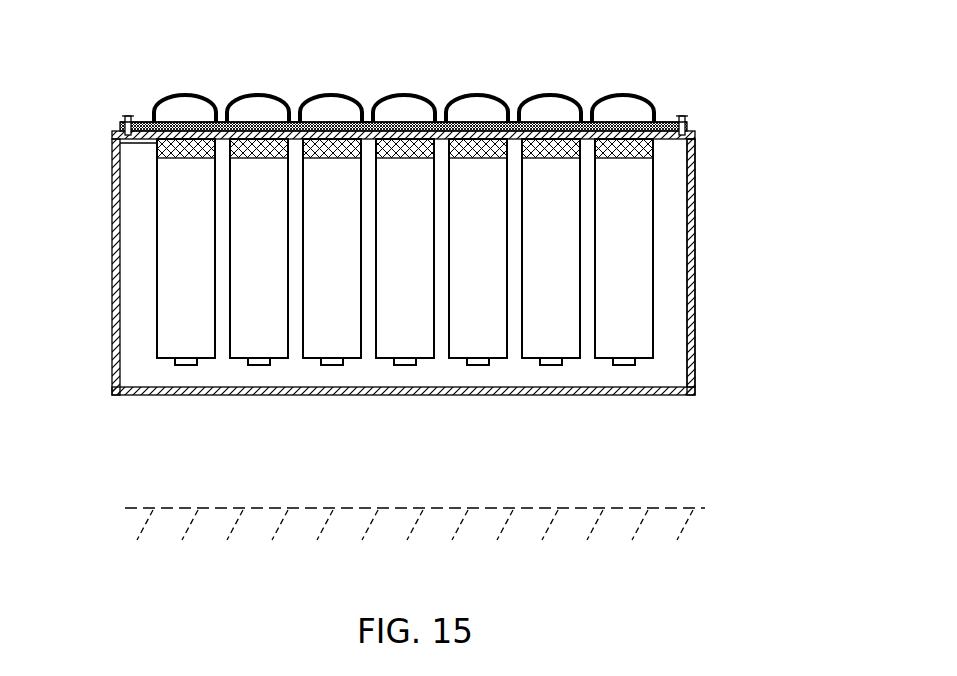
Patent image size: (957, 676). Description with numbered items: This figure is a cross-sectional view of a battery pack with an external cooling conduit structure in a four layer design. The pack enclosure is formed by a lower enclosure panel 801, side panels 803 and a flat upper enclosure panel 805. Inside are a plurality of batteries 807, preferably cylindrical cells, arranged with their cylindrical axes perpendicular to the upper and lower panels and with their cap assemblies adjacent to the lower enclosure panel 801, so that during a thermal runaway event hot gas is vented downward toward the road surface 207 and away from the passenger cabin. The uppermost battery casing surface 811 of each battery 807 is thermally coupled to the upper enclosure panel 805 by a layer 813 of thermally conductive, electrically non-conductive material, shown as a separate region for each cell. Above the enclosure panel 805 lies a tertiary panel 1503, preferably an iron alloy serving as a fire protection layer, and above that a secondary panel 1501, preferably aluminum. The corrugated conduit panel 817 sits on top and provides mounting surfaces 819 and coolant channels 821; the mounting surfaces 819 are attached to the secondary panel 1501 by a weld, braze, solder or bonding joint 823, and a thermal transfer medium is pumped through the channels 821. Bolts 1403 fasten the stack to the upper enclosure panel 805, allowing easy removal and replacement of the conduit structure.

The road surface 207 is at (391, 505).
The lower enclosure panel 801 is at (432, 396).
The side panels 803 is at (112, 318).
The upper enclosure panel 805 is at (696, 158).
The batteries 807 is at (203, 276).
The battery casing surface 811 is at (177, 159).
The layer of thermally conductive, electrically non-conductive material 813 is at (120, 143).
The conduit panel 817 is at (184, 94).
The mounting surfaces 819 is at (367, 106).
The coolant channels 821 is at (548, 93).
The joint 823 is at (510, 122).
The bolts 1403 is at (128, 115).
The secondary panel 1501 is at (618, 128).
The tertiary panel 1503 is at (655, 141).